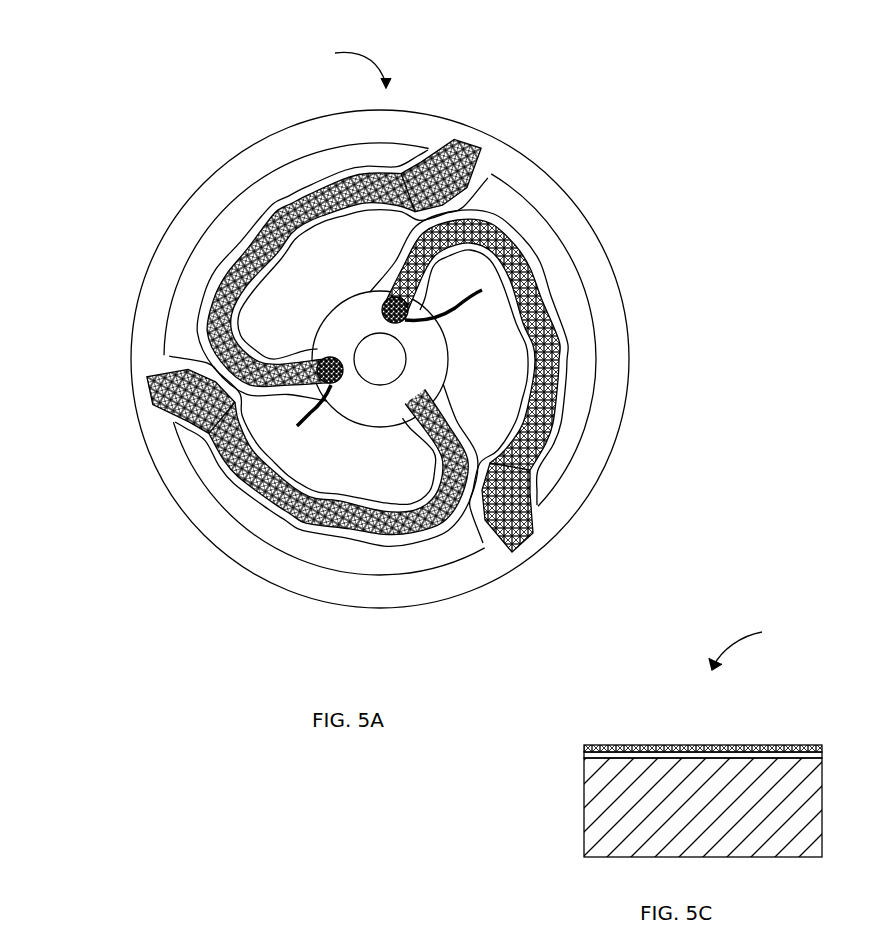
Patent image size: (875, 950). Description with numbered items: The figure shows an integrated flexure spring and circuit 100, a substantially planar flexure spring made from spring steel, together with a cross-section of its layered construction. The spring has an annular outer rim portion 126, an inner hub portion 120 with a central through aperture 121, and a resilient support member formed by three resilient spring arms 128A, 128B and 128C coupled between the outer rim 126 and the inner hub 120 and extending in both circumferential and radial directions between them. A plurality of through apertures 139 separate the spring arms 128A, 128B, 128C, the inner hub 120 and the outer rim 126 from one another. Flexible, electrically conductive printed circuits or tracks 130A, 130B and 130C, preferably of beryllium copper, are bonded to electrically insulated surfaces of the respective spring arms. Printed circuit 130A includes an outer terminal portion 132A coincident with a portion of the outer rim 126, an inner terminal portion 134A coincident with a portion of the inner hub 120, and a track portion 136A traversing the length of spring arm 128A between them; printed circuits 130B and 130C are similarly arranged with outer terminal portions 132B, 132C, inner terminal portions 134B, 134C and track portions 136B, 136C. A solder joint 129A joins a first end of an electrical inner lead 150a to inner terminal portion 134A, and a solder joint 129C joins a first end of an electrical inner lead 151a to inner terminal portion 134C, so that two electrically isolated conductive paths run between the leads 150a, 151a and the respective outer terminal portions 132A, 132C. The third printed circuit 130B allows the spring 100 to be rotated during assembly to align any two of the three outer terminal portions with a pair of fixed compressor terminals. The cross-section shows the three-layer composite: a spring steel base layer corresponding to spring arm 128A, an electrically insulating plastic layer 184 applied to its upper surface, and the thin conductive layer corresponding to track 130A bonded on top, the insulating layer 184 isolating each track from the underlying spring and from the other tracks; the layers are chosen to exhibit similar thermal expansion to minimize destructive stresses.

In FIG. 5A, the integrated flexure spring and circuit 100 is at (341, 66).
In FIG. 5C, the integrated flexure spring and circuit 100 is at (756, 646).
In FIG. 5A, the inner hub portion 120 is at (357, 310).
In FIG. 5A, the central through aperture 121 is at (404, 358).
In FIG. 5A, the annular outer rim portion 126 is at (530, 165).
In FIG. 5A, the resilient spring arm 128A is at (548, 262).
In FIG. 5C, the resilient spring arm 128A is at (585, 820).
In FIG. 5A, the resilient spring arm 128B is at (225, 455).
In FIG. 5A, the resilient spring arm 128C is at (290, 200).
In FIG. 5A, the solder joint 129A is at (390, 290).
In FIG. 5A, the solder joint 129C is at (335, 384).
In FIG. 5A, the printed circuit 130A is at (503, 222).
In FIG. 5C, the printed circuit 130A is at (665, 745).
In FIG. 5A, the printed circuit 130B is at (270, 502).
In FIG. 5A, the printed circuit 130C is at (262, 212).
In FIG. 5A, the outer terminal portion 132A is at (537, 520).
In FIG. 5A, the outer terminal portion 132B is at (150, 395).
In FIG. 5A, the outer terminal portion 132C is at (455, 140).
In FIG. 5A, the inner terminal portion 134A is at (394, 297).
In FIG. 5A, the inner terminal portion 134B is at (406, 415).
In FIG. 5A, the inner terminal portion 134C is at (323, 358).
In FIG. 5A, the track portion 136A is at (522, 352).
In FIG. 5A, the track portion 136B is at (320, 507).
In FIG. 5A, the track portion 136C is at (235, 248).
In FIG. 5A, the through apertures 139 is at (330, 160).
In FIG. 5A, the electrical inner lead 150a is at (468, 305).
In FIG. 5A, the electrical inner lead 151a is at (303, 430).
In FIG. 5C, the electrically insulating layer 184 is at (585, 758).